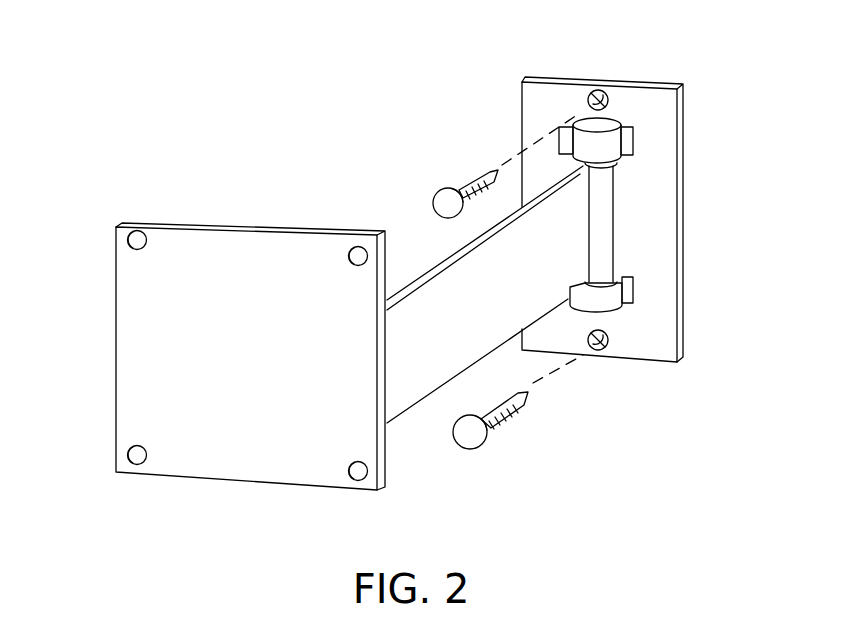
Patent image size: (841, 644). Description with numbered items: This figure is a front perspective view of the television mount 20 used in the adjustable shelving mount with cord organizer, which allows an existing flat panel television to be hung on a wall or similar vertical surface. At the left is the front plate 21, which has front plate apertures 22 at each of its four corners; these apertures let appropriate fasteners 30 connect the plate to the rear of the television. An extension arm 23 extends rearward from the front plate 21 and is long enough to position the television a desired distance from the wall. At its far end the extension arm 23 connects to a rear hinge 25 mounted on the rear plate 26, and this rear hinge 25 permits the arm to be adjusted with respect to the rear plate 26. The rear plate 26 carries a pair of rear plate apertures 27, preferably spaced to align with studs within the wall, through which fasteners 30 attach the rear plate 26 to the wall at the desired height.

The television mount 20 is at (131, 99).
The front plate 21 is at (258, 242).
The front plate apertures 22 is at (128, 238).
The extension arm 23 is at (428, 295).
The rear hinge 25 is at (605, 297).
The rear plate 26 is at (543, 97).
The rear plate apertures 27 is at (600, 93).
The fasteners 30 is at (480, 173).